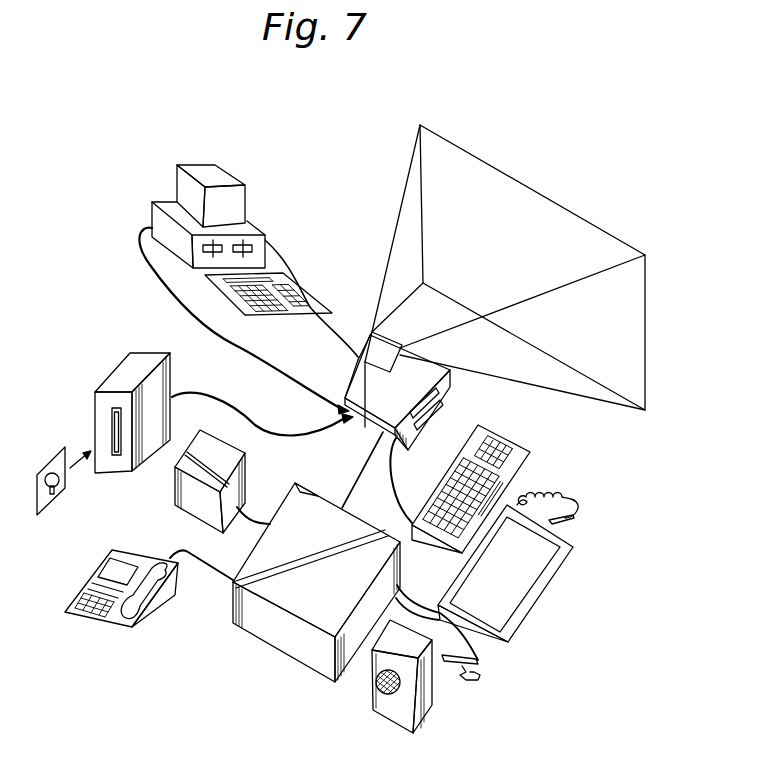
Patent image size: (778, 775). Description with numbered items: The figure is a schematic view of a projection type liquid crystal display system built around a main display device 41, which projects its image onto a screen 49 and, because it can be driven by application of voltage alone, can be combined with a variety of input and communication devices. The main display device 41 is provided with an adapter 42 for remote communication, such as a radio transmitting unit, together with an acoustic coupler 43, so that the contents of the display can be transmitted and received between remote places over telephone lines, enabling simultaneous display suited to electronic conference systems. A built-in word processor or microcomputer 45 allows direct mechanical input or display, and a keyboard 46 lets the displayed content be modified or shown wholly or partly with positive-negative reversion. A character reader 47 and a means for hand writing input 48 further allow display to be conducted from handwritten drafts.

The main display device 41 is at (382, 390).
The adapter 42 is at (288, 643).
The acoustic coupler 43 is at (112, 615).
The microcomputer 45 is at (234, 199).
The keyboard 46 is at (520, 453).
The character reader 47 is at (172, 492).
The means for hand writing input 48 is at (548, 580).
The screen 49 is at (550, 206).